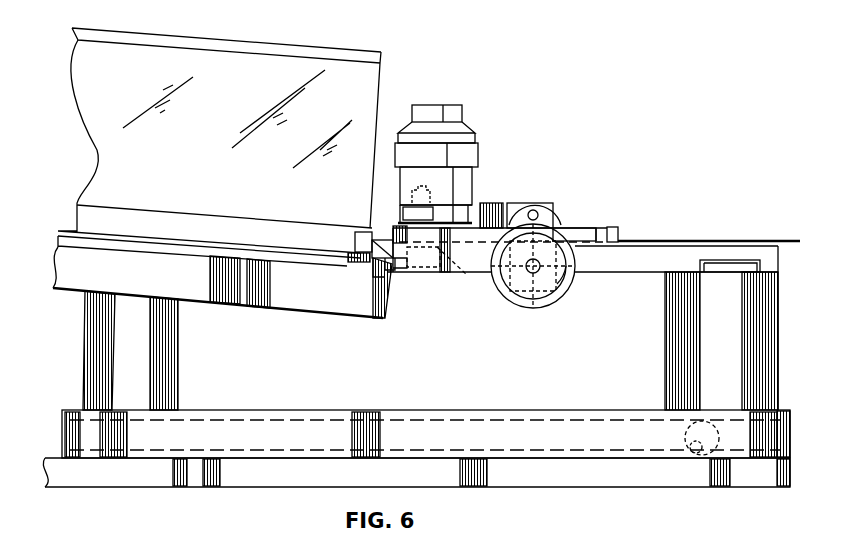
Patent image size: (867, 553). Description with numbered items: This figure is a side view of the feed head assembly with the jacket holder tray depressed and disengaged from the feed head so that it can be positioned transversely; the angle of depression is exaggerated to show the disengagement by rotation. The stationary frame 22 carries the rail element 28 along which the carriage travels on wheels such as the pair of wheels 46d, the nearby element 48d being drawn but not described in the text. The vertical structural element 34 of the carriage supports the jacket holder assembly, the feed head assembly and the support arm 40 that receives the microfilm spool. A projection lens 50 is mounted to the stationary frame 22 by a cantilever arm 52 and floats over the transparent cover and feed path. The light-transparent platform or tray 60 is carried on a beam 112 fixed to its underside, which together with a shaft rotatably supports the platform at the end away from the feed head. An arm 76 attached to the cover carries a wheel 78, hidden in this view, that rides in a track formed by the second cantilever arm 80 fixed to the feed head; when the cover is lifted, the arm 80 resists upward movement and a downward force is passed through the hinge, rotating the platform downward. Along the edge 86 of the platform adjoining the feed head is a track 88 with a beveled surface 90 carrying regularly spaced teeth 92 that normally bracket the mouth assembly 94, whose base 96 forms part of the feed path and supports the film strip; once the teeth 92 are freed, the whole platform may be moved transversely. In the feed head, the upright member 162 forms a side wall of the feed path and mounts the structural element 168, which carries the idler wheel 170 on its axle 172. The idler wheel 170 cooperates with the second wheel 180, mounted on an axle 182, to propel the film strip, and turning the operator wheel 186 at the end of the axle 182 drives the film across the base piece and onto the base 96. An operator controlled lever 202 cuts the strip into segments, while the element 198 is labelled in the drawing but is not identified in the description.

The stationary frame 22 is at (58, 468).
The rail element 28 is at (320, 410).
The vertical structural element 34 is at (585, 389).
The support arm 40 is at (781, 240).
The pair of wheels 46d is at (685, 437).
The roller axle 48d is at (694, 452).
The projection lens 50 is at (467, 123).
The cantilever arm 52 is at (478, 156).
The platform or tray 60 is at (77, 229).
The arm 76 is at (76, 206).
The wheel 78 is at (459, 273).
The second cantilever arm 80 is at (400, 207).
The edge of the platform 86 is at (388, 264).
The track 88 is at (373, 277).
The beveled surface 90 is at (372, 248).
The teeth 92 is at (398, 262).
The mouth assembly 94 is at (380, 238).
The base 96 is at (378, 238).
The beam 112 is at (76, 265).
The upright member 162 is at (614, 227).
The structural element 168 is at (493, 204).
The idler wheel 170 is at (527, 194).
The axle 172 is at (540, 215).
The second wheel 180 is at (504, 298).
The axle 182 is at (530, 275).
The operator wheel 186 is at (557, 284).
The stop 198 is at (597, 226).
The operator controlled lever 202 is at (727, 272).